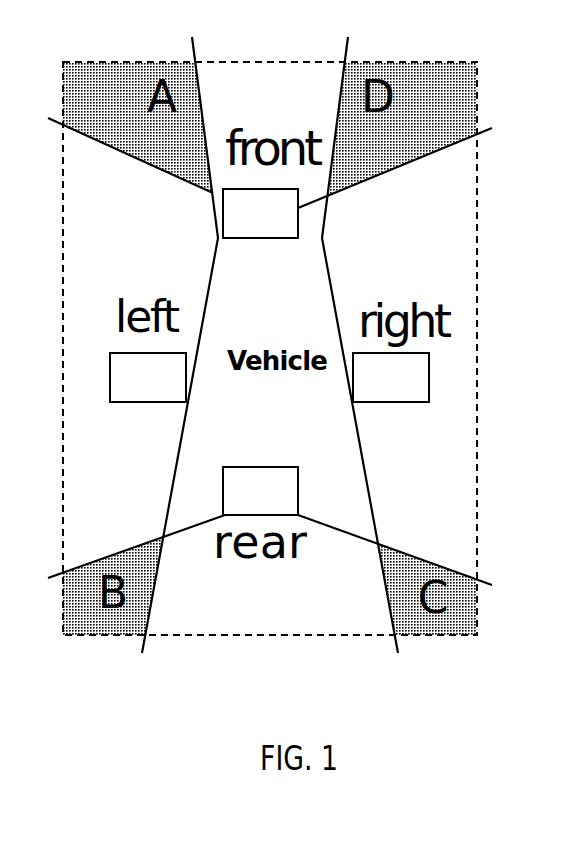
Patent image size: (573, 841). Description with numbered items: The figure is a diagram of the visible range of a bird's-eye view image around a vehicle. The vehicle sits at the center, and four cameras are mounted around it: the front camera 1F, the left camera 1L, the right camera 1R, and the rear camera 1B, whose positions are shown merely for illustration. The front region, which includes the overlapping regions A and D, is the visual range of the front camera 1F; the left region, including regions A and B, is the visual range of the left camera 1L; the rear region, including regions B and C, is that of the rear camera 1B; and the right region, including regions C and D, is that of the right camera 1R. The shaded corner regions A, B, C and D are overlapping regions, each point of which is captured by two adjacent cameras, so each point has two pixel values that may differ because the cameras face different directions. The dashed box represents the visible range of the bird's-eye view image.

The front camera 1F is at (260, 213).
The left camera 1L is at (148, 377).
The right camera 1R is at (391, 377).
The rear camera 1B is at (260, 491).